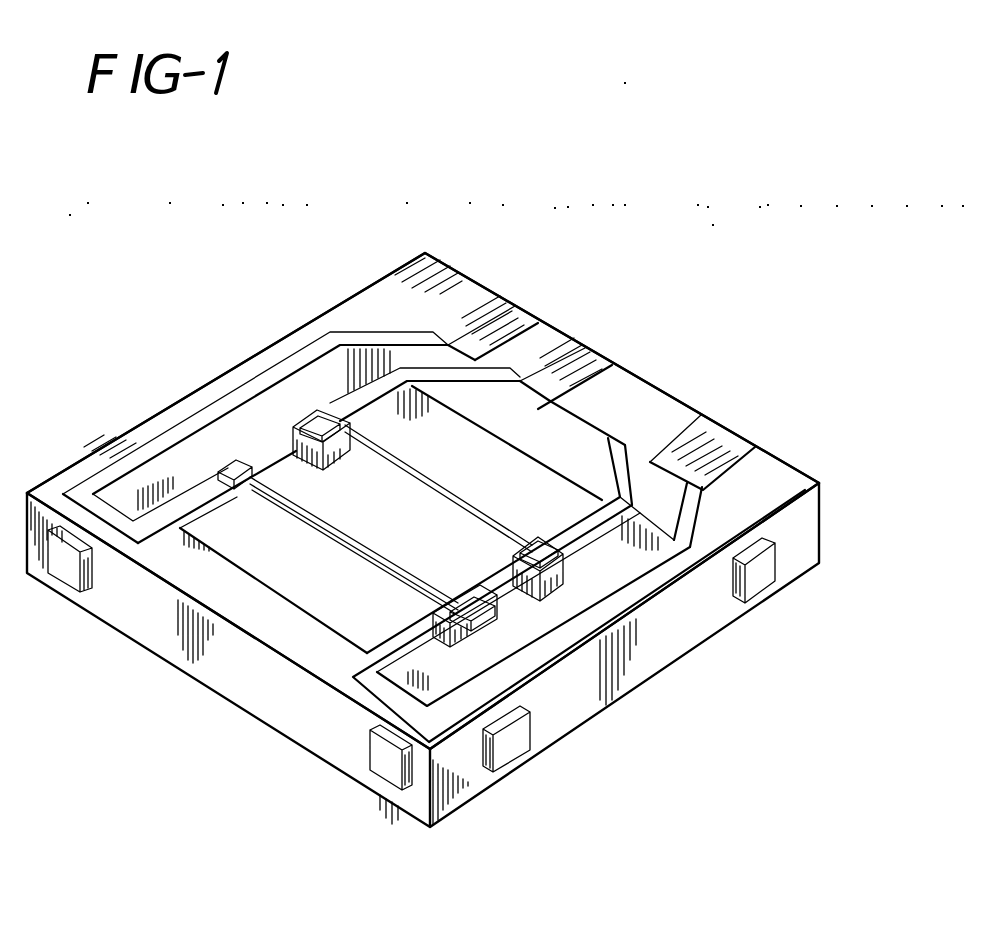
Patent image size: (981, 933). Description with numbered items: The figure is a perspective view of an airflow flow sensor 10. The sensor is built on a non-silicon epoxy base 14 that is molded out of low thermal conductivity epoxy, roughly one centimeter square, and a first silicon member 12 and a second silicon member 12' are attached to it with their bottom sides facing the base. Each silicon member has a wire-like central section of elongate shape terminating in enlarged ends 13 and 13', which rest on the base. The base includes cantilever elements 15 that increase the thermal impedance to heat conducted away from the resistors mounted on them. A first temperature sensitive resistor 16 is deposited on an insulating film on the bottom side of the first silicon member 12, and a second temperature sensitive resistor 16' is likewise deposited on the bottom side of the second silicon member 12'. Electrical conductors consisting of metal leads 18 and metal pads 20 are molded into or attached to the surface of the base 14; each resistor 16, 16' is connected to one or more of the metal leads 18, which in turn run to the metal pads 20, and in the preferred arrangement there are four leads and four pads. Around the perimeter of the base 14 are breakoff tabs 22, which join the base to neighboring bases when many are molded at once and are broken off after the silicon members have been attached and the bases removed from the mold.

The flow sensor 10 is at (657, 124).
The first silicon member 12 is at (266, 575).
The second silicon member 12' is at (475, 426).
The enlarged ends 13 is at (307, 496).
The enlarged ends 13' is at (508, 471).
The epoxy base 14 is at (250, 717).
The cantilever elements 15 is at (497, 637).
The first temperature sensitive resistor 16 is at (354, 551).
The second temperature sensitive resistor 16' is at (438, 488).
The metal leads 18 is at (455, 373).
The metal pads 20 is at (638, 398).
The breakoff tabs 22 is at (505, 747).